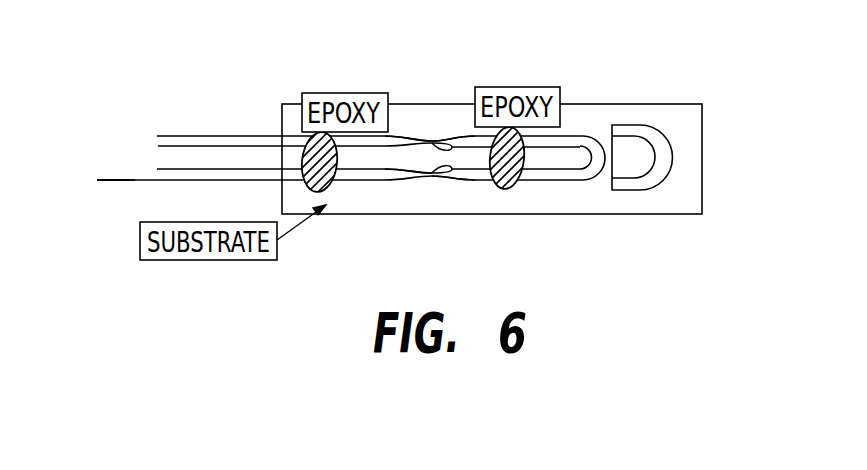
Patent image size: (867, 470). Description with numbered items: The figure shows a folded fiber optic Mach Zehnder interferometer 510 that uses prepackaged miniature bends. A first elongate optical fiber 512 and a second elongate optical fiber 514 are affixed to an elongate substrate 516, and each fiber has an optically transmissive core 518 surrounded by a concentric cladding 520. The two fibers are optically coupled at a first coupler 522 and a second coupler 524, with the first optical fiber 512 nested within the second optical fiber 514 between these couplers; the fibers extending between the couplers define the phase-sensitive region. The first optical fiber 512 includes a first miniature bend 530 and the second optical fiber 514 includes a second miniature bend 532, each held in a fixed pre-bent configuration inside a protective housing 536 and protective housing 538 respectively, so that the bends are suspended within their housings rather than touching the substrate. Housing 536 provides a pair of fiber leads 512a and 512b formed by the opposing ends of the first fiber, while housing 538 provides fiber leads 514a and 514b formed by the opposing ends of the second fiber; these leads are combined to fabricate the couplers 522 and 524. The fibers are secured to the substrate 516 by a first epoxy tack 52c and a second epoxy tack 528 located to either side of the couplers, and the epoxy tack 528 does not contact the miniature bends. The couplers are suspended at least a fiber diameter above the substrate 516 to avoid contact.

The fiber optic Mach Zehnder interferometer 510 is at (483, 33).
The first elongate optical fiber 512 is at (180, 169).
The second elongate optical fiber 514 is at (182, 135).
The optically transmissive core 518 is at (97, 180).
The concentric cladding 520 is at (114, 182).
The first epoxy tack 52c is at (302, 137).
The first coupler 522 is at (398, 136).
The second coupler 524 is at (438, 172).
The fiber lead 512a is at (441, 140).
The fiber lead 514a is at (464, 135).
The fiber lead 512b is at (437, 163).
The fiber lead 514b is at (492, 192).
The second epoxy tack 528 is at (517, 184).
The first miniature bend 530 is at (562, 146).
The protective housing 536 is at (603, 181).
The second miniature bend 532 is at (672, 155).
The protective housing 538 is at (669, 168).
The elongate substrate 516 is at (648, 214).